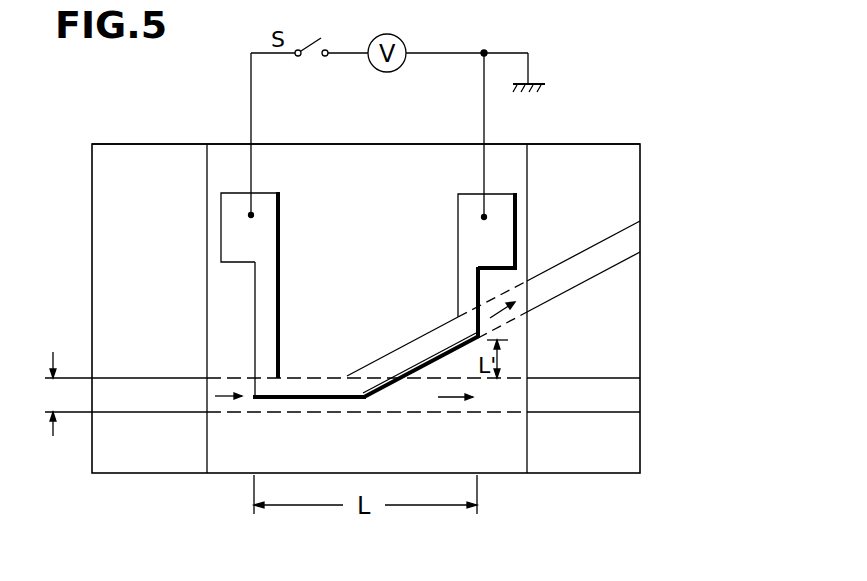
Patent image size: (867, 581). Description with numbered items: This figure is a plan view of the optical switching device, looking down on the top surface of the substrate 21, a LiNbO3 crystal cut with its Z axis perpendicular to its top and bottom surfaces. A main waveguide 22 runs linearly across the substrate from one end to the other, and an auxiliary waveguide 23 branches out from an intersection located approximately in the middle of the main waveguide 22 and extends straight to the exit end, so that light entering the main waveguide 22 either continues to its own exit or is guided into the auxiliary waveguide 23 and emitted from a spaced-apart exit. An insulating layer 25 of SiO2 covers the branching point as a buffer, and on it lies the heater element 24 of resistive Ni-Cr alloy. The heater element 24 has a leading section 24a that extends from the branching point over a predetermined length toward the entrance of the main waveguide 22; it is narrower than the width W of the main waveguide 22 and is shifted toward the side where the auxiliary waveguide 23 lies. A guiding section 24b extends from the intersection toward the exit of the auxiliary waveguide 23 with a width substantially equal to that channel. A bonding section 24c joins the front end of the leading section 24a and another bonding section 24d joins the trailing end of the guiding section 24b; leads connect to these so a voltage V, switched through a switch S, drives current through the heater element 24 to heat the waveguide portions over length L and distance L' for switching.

The substrate 21 is at (641, 322).
The main waveguide 22 is at (135, 379).
The auxiliary waveguide 23 is at (641, 232).
The heater element 24 is at (369, 225).
The leading section 24a is at (318, 378).
The guiding section 24b is at (402, 350).
The bonding section 24c is at (279, 217).
The bonding section 24d is at (466, 213).
The insulating layer 25 is at (229, 149).